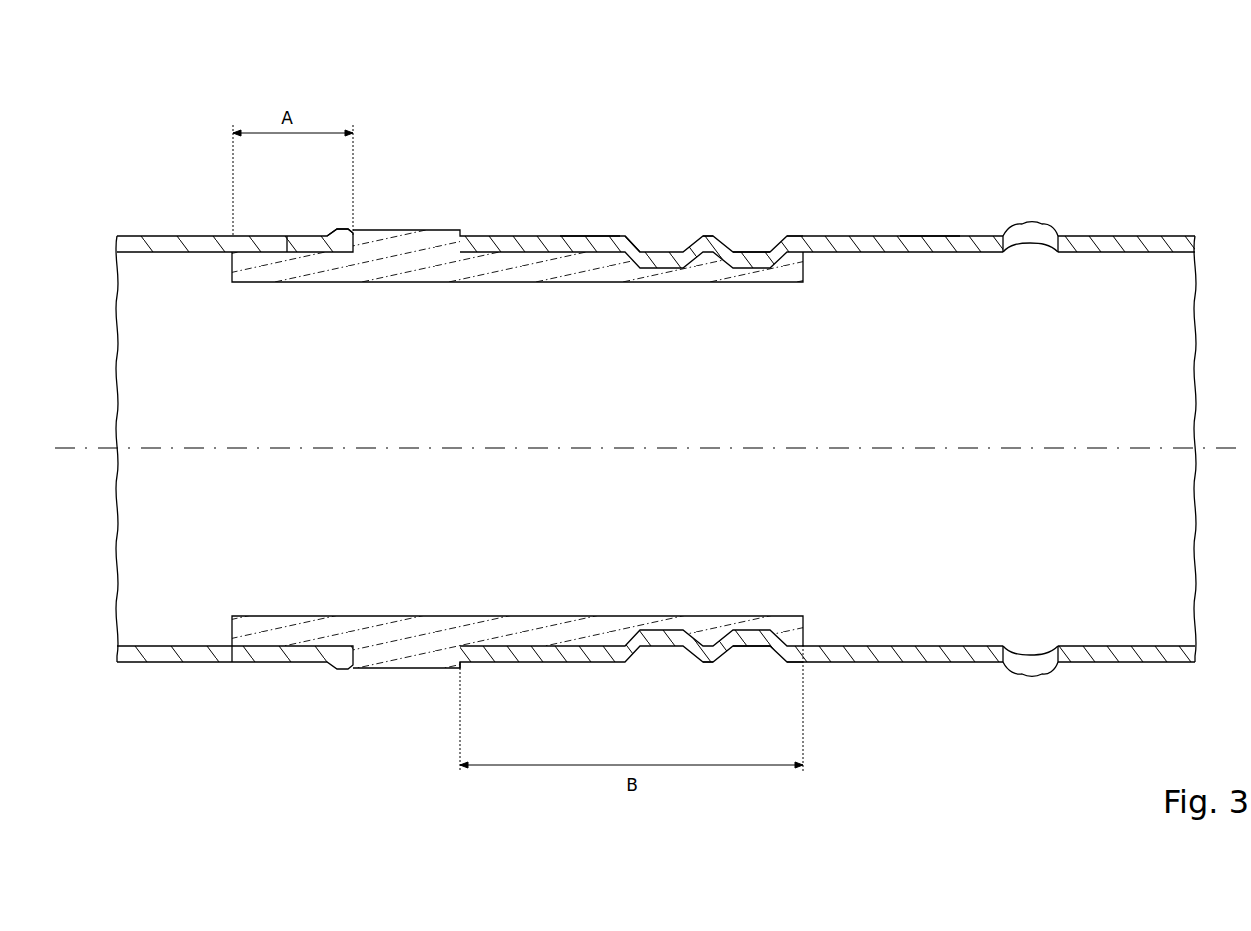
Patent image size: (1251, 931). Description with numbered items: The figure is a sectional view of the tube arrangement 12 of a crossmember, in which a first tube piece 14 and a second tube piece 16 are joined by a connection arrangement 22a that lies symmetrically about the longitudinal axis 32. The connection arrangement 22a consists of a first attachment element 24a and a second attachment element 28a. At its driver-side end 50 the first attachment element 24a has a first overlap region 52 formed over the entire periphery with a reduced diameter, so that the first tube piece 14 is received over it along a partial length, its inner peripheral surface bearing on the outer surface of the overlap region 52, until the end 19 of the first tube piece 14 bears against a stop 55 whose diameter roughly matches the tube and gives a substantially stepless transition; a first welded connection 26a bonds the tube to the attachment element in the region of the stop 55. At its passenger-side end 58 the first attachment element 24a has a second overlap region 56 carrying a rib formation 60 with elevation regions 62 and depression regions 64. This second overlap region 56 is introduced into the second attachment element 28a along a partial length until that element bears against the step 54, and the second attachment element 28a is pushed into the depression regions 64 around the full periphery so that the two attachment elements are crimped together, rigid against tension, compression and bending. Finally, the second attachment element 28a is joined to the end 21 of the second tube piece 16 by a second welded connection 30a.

The tube arrangement 12 is at (762, 97).
The first tube piece 14 is at (219, 237).
The second tube piece 16 is at (1098, 245).
The end of the first tube piece 19 is at (300, 680).
The end of the second tube piece 21 is at (1112, 680).
The connection arrangement 22a is at (690, 150).
The first attachment element 24a is at (445, 241).
The first welded connection 26a is at (343, 668).
The second attachment element 28a is at (930, 245).
The second welded connection 30a is at (1040, 667).
The longitudinal axis 32 is at (100, 448).
The driver-side end 50 is at (233, 662).
The first overlap region 52 is at (288, 236).
The step 54 is at (457, 670).
The stop 55 is at (355, 232).
The second overlap region 56 is at (628, 240).
The passenger-side end 58 is at (805, 240).
The rib formation 60 is at (710, 665).
The elevation regions 62 is at (706, 240).
The depression regions 64 is at (752, 250).